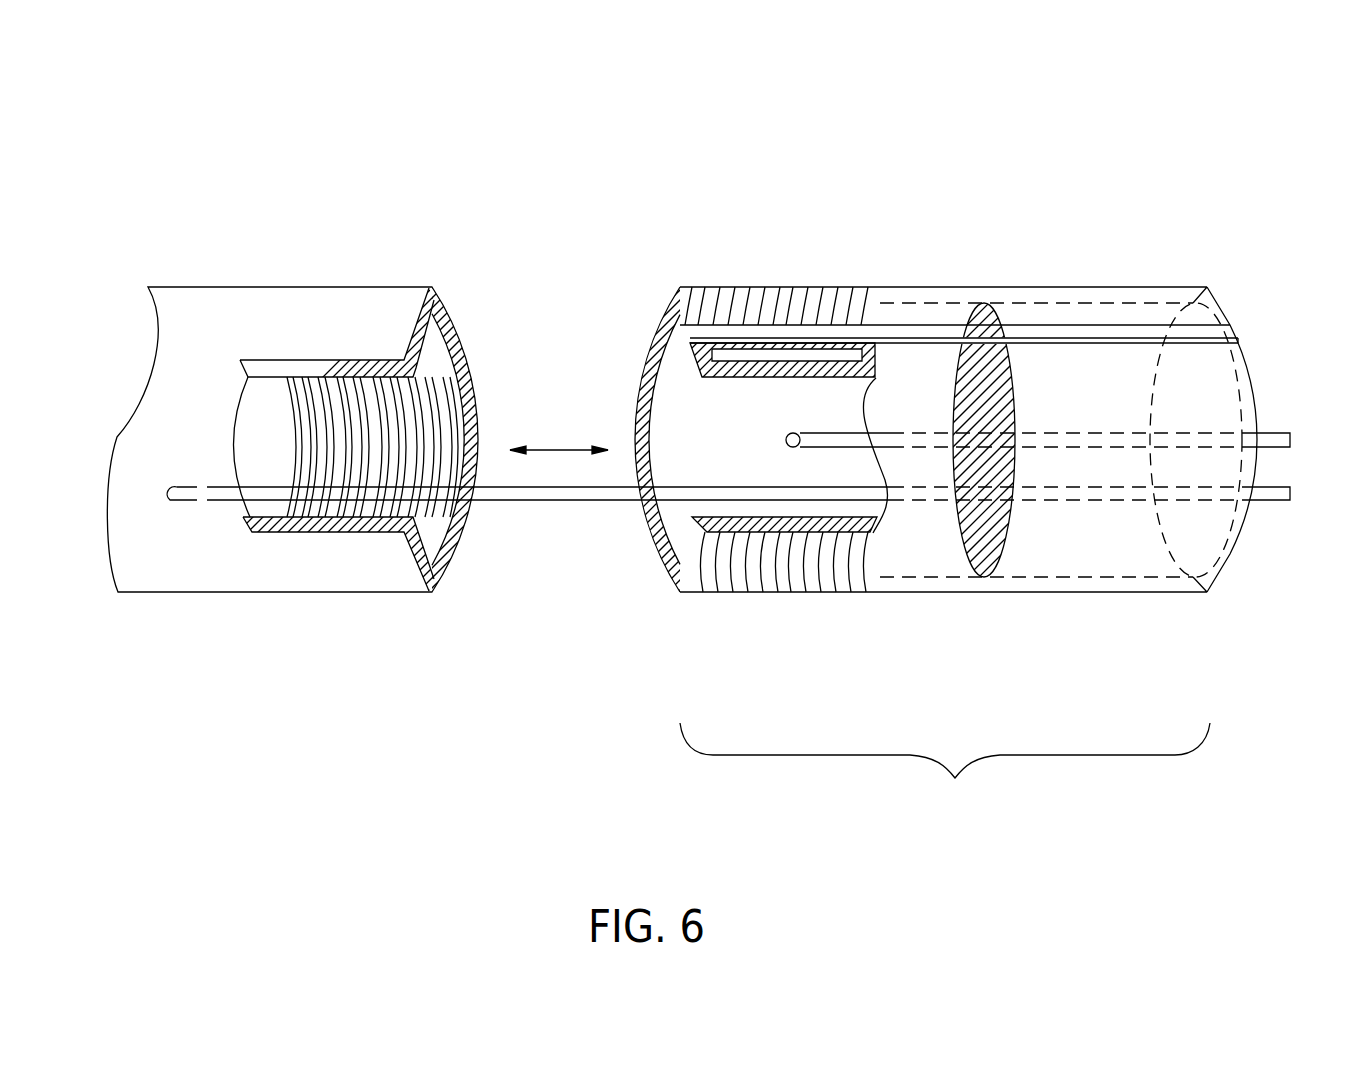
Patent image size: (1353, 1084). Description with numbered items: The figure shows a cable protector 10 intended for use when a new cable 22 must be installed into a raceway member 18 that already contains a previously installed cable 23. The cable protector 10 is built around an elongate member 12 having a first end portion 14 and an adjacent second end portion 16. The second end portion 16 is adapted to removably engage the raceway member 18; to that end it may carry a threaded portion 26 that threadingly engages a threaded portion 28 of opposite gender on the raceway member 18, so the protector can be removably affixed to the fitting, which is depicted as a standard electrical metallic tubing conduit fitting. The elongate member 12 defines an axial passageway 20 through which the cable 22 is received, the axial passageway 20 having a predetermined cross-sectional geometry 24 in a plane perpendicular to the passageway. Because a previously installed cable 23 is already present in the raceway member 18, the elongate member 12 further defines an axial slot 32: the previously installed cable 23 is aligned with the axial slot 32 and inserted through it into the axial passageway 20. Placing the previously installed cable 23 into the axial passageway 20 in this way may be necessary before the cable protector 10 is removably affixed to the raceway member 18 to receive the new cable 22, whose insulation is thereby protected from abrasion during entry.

The cable protector 10 is at (965, 145).
The elongate member 12 is at (945, 768).
The first end portion 14 is at (1102, 242).
The second end portion 16 is at (765, 270).
The raceway member 18 is at (234, 257).
The axial passageway 20 is at (686, 508).
The cable 22 is at (1278, 400).
The previously installed cable 23 is at (1272, 525).
The cross-sectional geometry 24 is at (973, 537).
The threaded portion 26 is at (845, 600).
The threaded portion 28 is at (427, 518).
The axial slot 32 is at (955, 327).